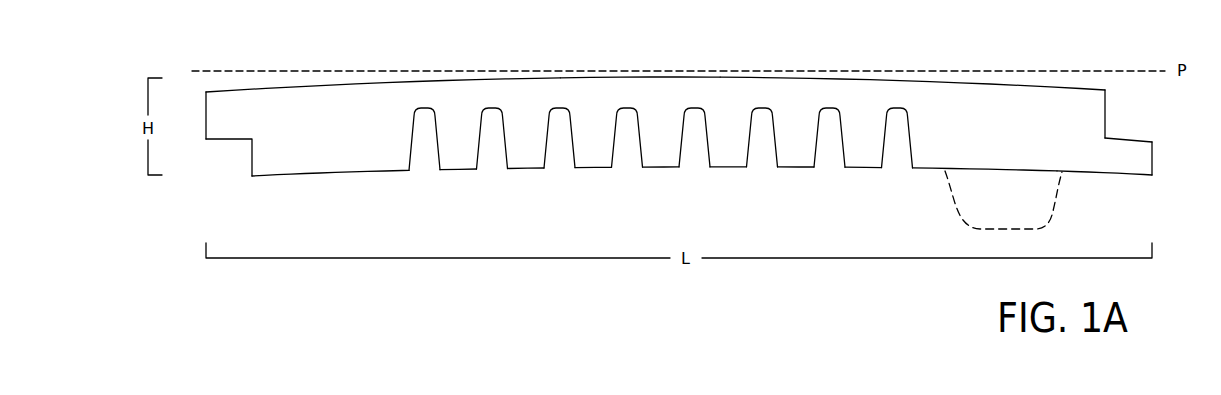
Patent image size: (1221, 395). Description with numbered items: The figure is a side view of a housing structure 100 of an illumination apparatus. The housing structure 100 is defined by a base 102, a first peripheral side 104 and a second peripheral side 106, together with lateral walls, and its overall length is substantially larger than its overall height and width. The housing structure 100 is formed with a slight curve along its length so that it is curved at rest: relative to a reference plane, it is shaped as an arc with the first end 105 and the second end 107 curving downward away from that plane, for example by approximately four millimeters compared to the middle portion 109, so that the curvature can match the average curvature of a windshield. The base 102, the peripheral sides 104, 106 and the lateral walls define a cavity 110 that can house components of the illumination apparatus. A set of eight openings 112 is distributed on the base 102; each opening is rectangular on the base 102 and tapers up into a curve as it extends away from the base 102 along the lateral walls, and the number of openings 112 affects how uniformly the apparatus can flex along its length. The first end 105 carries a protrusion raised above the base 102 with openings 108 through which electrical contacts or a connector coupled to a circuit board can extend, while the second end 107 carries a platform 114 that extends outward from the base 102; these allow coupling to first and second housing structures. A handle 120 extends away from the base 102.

The housing structure 100 is at (697, 124).
The base 102 is at (697, 125).
The first peripheral side 104 is at (204, 125).
The first end 105 is at (227, 84).
The second peripheral side 106 is at (1108, 123).
The second end 107 is at (1137, 188).
The openings 108 is at (227, 140).
The middle portion 109 is at (626, 63).
The cavity 110 is at (312, 123).
The openings 112 is at (492, 153).
The platform 114 is at (1137, 138).
The handle 120 is at (957, 190).